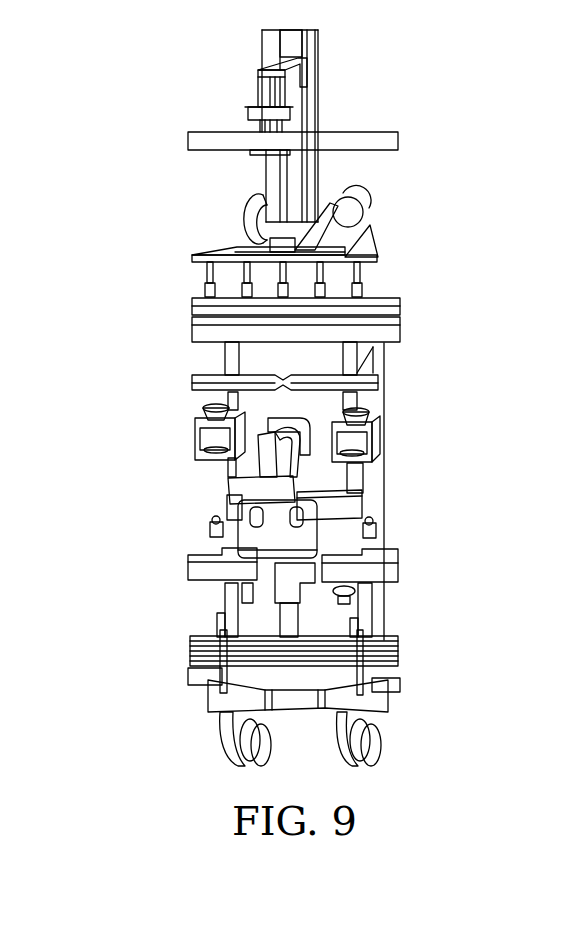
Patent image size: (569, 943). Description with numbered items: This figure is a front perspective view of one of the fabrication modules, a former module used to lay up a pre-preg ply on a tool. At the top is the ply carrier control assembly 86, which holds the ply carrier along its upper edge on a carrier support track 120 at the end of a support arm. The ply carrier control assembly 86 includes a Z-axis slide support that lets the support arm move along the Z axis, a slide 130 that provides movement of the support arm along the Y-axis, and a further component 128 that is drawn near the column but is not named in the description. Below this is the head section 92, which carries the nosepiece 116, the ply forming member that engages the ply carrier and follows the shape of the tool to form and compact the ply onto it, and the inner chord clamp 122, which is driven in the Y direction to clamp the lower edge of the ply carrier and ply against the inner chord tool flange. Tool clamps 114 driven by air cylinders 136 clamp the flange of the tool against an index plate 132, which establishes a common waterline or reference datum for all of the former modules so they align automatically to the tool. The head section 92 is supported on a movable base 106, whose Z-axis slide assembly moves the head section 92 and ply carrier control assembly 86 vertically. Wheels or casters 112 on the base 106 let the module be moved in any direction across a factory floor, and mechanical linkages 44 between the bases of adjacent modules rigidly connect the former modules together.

The ply carrier control assembly 86 is at (342, 80).
The carrier support track 120 is at (215, 131).
The ring 128 is at (267, 174).
The slide 130 is at (318, 229).
The nosepiece 116 is at (400, 310).
The inner chord clamp 122 is at (190, 330).
The index plate 132 is at (193, 378).
The tool clamps 114 is at (203, 406).
The air cylinders 136 is at (380, 446).
The mechanical linkages 44 is at (192, 553).
The head section 92 is at (479, 290).
The base 106 is at (479, 552).
The wheels or casters 112 is at (220, 730).